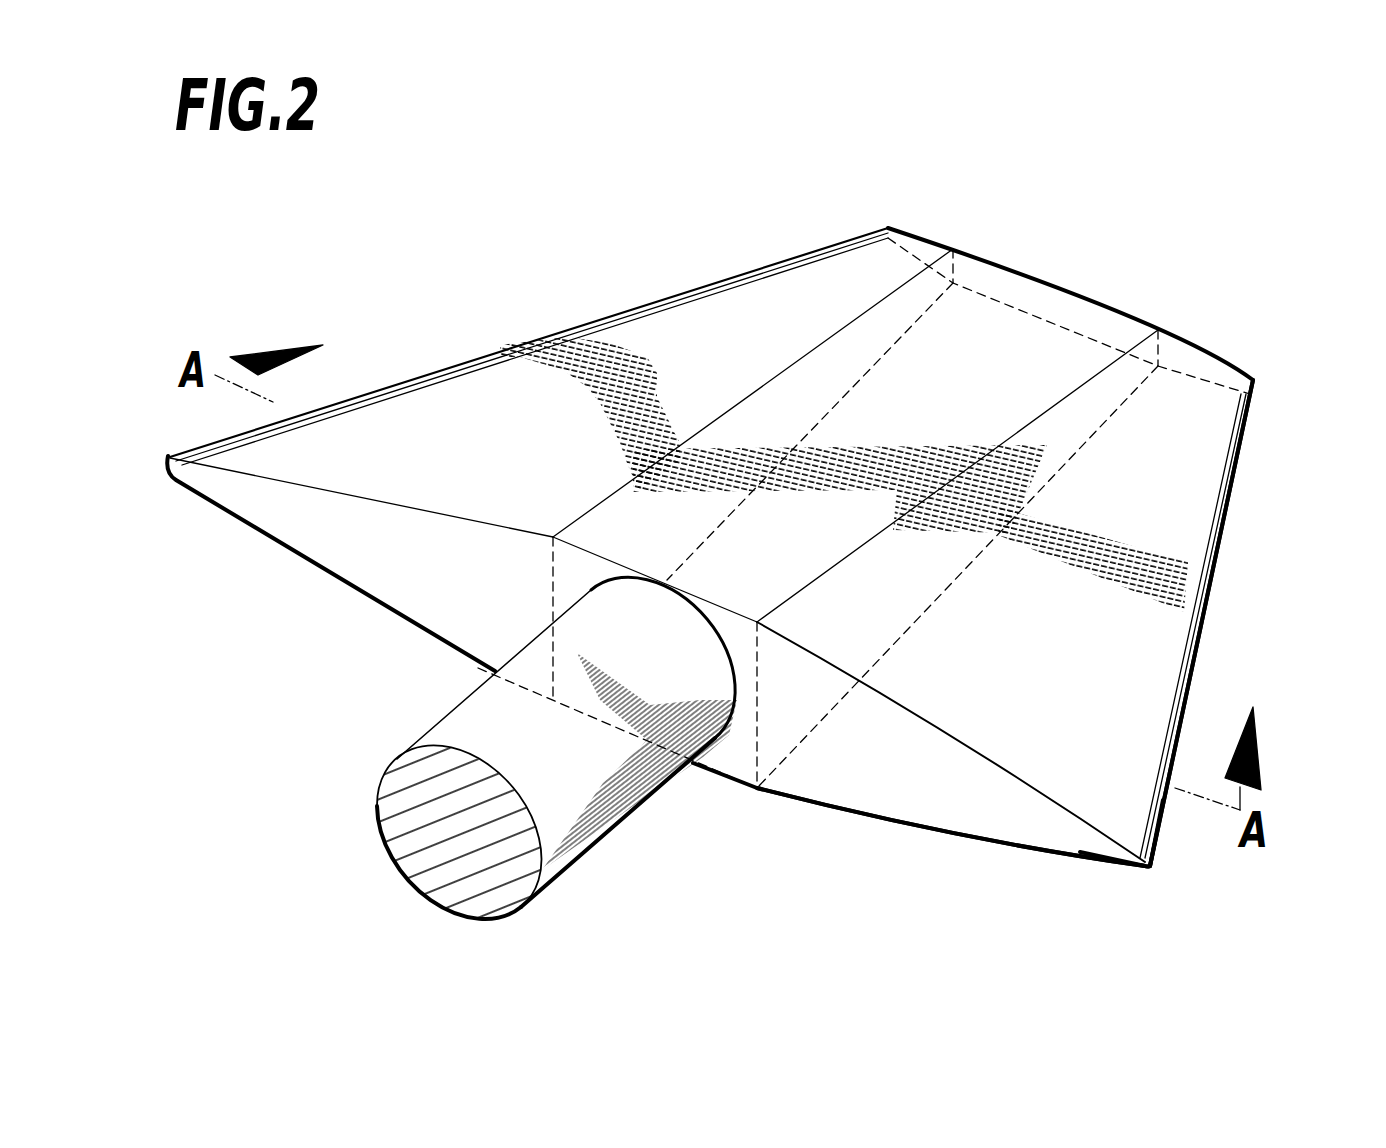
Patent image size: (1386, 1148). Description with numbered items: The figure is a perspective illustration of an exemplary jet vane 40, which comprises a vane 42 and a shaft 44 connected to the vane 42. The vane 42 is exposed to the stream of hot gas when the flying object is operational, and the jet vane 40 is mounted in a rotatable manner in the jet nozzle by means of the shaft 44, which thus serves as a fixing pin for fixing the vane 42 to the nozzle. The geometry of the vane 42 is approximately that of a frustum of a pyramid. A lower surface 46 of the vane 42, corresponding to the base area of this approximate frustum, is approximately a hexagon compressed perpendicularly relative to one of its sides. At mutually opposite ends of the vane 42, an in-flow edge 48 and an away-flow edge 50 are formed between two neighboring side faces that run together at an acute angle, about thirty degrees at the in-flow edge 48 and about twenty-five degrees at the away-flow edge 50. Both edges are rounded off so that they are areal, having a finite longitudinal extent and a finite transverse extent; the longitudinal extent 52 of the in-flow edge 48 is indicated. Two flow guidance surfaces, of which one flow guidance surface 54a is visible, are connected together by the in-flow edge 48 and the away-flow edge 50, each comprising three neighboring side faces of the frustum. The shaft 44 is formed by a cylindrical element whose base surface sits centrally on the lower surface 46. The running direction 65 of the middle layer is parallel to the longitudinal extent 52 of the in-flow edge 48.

The jet vane 40 is at (560, 262).
The vane 42 is at (752, 274).
The shaft 44 is at (587, 790).
The lower surface 46 is at (938, 806).
The in-flow edge 48 is at (1157, 845).
The away-flow edge 50 is at (410, 380).
The longitudinal extent 52 is at (1241, 568).
The flow guidance surface 54a is at (1013, 322).
The running direction 65 is at (1259, 452).